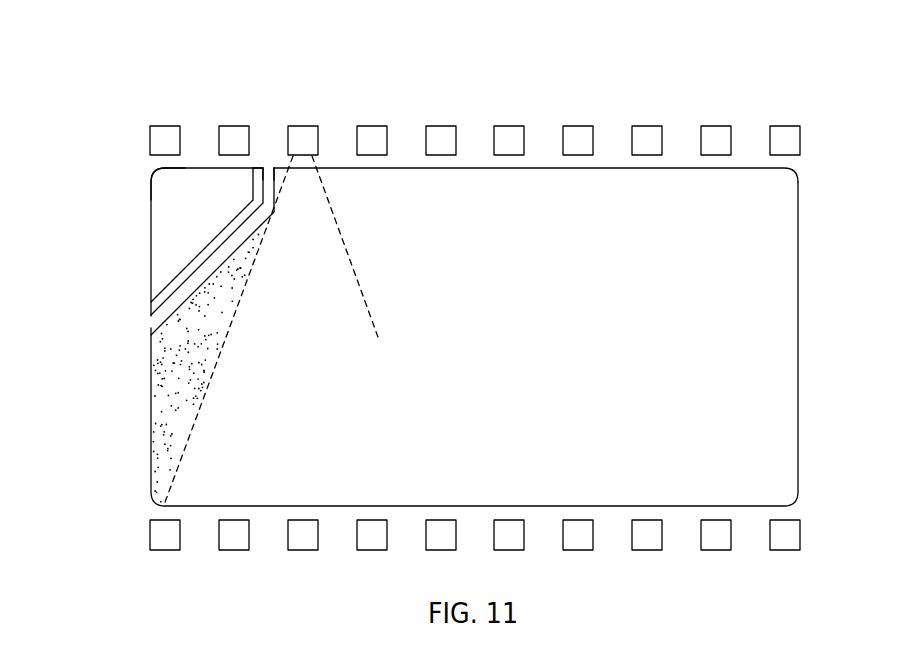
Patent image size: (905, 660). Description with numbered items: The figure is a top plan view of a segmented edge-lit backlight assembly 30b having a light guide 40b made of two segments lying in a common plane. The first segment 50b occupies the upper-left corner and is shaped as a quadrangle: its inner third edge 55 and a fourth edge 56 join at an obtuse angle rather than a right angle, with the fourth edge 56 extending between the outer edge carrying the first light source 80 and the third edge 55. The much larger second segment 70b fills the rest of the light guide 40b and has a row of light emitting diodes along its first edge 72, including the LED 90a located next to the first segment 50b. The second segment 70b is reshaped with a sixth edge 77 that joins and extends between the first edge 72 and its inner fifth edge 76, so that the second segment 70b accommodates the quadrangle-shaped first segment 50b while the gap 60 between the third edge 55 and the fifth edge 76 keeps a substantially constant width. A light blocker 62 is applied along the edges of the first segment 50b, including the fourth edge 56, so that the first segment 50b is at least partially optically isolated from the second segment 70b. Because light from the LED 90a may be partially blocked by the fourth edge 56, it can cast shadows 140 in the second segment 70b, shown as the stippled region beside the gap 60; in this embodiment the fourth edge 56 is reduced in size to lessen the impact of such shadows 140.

The backlight assembly 30b is at (124, 82).
The first light source 80 is at (248, 116).
The sixth edge 77 is at (266, 167).
The LED 90a is at (305, 124).
The light guide 40b is at (538, 167).
The first edge 72 is at (741, 167).
The second segment 70b is at (750, 258).
The first segment 50b is at (163, 185).
The fourth edge 56 is at (266, 190).
The light blocker 62 is at (227, 238).
The third edge 55 is at (210, 263).
The fifth edge 76 is at (172, 312).
The gap 60 is at (131, 337).
The shadows 140 is at (189, 418).